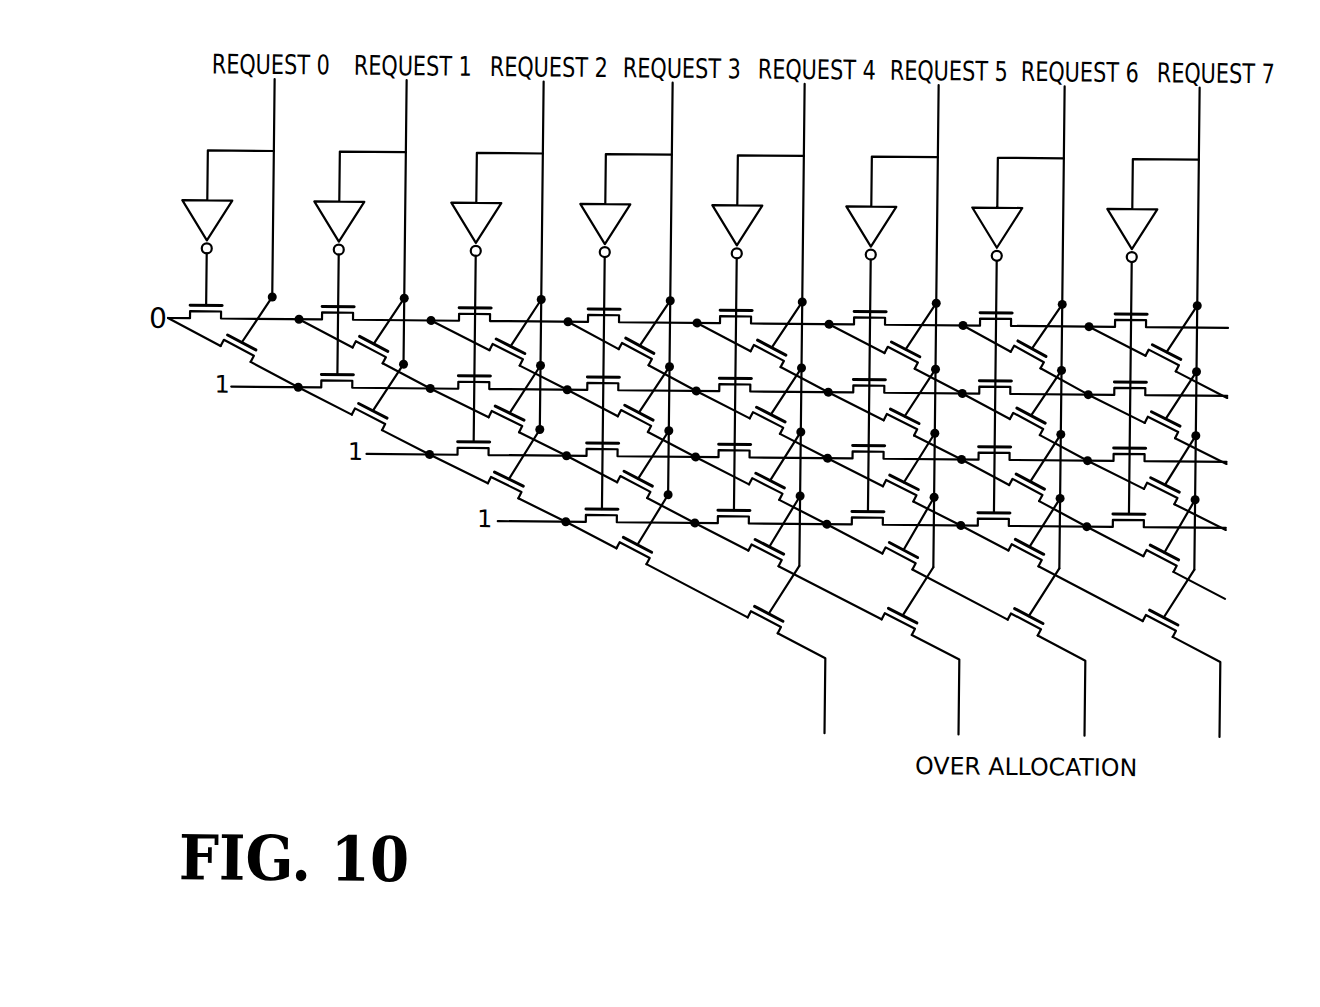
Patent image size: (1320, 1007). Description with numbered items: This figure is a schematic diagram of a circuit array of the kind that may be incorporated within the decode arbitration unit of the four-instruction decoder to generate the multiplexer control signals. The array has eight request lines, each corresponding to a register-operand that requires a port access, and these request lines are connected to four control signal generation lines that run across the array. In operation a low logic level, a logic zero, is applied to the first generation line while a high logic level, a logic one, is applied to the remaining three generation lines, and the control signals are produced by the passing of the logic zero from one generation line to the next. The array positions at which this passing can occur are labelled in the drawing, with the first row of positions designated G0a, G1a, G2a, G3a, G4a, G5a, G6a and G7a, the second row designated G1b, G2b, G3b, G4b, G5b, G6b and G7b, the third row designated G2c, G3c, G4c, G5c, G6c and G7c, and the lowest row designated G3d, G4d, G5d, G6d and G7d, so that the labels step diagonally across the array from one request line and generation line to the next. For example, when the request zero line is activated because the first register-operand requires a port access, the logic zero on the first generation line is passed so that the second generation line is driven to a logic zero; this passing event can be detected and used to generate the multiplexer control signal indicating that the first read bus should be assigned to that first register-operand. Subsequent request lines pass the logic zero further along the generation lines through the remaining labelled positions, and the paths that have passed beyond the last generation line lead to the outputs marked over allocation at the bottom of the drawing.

The pass transistor G0a is at (259, 358).
The pass transistor G1b is at (392, 427).
The pass transistor G2c is at (532, 494).
The pass transistor G3d is at (651, 557).
The pass transistor G1a is at (393, 360).
The pass transistor G2b is at (533, 428).
The pass transistor G3c is at (661, 495).
The pass transistor G4d is at (794, 558).
The pass transistor G2a is at (534, 361).
The pass transistor G3b is at (662, 429).
The pass transistor G4c is at (794, 496).
The pass transistor G5d is at (927, 560).
The pass transistor G3a is at (663, 362).
The pass transistor G4b is at (795, 430).
The pass transistor G5c is at (927, 498).
The pass transistor G6d is at (1056, 561).
The pass transistor G4a is at (796, 363).
The pass transistor G5b is at (928, 432).
The pass transistor G6c is at (1055, 499).
The pass transistor G7d is at (1189, 562).
The pass transistor G5a is at (929, 365).
The pass transistor G6b is at (1056, 433).
The pass transistor G7c is at (1189, 500).
The pass transistor G6a is at (1057, 366).
The pass transistor G7b is at (1190, 434).
The pass transistor G7a is at (1191, 367).